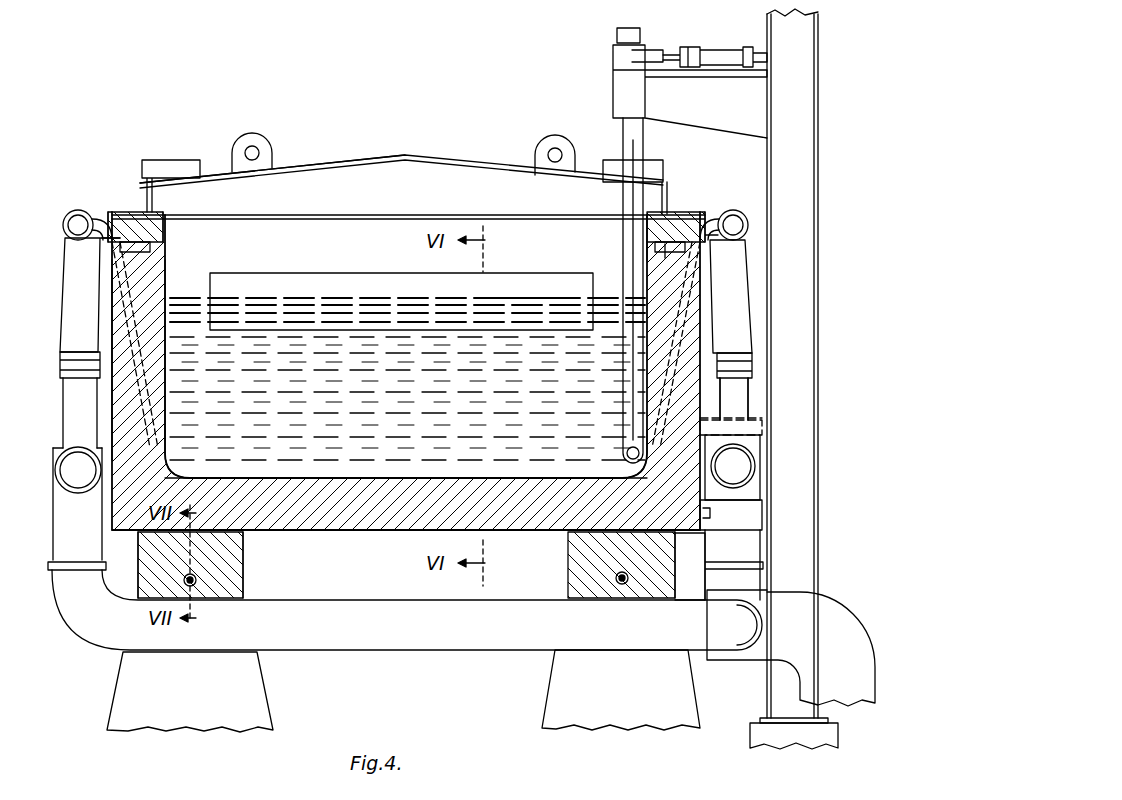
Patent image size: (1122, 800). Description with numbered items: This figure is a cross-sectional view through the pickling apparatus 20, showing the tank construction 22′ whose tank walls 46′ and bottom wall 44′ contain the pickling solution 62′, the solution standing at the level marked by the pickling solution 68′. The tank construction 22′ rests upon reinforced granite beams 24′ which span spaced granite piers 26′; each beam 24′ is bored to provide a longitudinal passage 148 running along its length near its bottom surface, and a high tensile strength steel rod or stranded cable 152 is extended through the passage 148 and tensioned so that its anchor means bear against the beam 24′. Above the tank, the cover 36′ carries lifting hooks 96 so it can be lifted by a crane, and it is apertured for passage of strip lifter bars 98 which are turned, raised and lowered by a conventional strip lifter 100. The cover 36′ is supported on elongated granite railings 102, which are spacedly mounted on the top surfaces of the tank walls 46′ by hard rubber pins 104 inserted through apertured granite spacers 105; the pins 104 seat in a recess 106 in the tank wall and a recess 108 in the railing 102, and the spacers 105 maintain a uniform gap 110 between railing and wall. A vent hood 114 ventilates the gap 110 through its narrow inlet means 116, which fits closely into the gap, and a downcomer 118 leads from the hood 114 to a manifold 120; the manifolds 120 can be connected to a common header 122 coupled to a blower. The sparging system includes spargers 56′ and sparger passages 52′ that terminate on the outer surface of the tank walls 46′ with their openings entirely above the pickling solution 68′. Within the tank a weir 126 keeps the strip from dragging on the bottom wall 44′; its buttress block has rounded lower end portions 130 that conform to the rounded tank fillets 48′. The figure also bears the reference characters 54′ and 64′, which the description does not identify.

The pickling apparatus 20 is at (388, 145).
The tank construction 22′ is at (376, 530).
The reinforced granite beam 24′ is at (232, 576).
The granite pier 26′ is at (250, 688).
The cover 36′ is at (428, 158).
The bottom wall 44′ is at (330, 528).
The tank wall 46′ is at (168, 378).
The rounded tank fillet 48′ is at (178, 462).
The sparger passage 52′ is at (110, 330).
The pipe section line 54′ is at (764, 418).
The sparger 56′ is at (710, 300).
The pickling solution 62′ is at (300, 348).
The fluid connection ring 64′ is at (78, 210).
The pickling solution 68′ is at (506, 297).
The lifting hook 96 is at (268, 146).
The strip lifter bar 98 is at (628, 352).
The strip lifter 100 is at (767, 30).
The granite railing 102 is at (122, 212).
The pin 104 is at (152, 249).
The apertured granite spacer 105 is at (160, 256).
The recess 106 is at (165, 285).
The recess 108 is at (164, 232).
The gap 110 is at (650, 250).
The vent hood 114 is at (748, 346).
The inlet means 116 is at (114, 216).
The downcomer 118 is at (742, 386).
The manifold 120 is at (756, 466).
The common header 122 is at (832, 612).
The weir 126 is at (244, 298).
The lower end portion 130 is at (625, 475).
The longitudinal passage 148 is at (200, 578).
The steel rod or stranded cable 152 is at (175, 580).